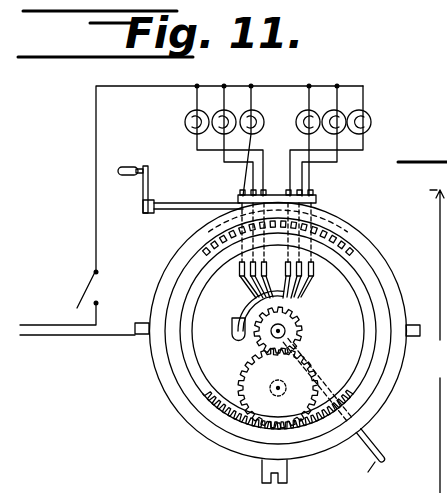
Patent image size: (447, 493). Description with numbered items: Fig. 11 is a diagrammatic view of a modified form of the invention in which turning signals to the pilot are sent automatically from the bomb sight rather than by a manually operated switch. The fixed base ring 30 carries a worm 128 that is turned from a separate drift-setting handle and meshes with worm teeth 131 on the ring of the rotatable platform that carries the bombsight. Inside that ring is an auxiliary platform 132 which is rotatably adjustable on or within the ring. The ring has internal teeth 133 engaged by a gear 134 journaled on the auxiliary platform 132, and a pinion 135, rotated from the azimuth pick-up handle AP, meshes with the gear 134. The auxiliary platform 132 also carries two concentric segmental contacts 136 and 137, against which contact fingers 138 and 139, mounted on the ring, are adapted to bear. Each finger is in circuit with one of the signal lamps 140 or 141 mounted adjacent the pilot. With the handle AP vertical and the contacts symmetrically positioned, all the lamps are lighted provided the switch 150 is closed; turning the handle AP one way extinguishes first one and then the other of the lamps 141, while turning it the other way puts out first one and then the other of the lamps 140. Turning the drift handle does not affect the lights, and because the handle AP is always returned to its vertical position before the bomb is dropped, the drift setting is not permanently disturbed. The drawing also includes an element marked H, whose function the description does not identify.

The fixed base ring 30 is at (160, 289).
The worm 128 is at (249, 191).
The worm teeth 131 is at (320, 224).
The auxiliary platform 132 is at (184, 352).
The internal teeth 133 is at (236, 415).
The gear 134 is at (312, 353).
The pinion 135 is at (288, 332).
The segmental contact 136 is at (232, 326).
The segmental contact 137 is at (249, 345).
The contact finger 138 is at (252, 293).
The contact finger 139 is at (305, 291).
The signal lamp 140 is at (189, 110).
The signal lamp 141 is at (369, 112).
The switch 150 is at (88, 281).
The azimuth pick-up handle AP is at (333, 415).
The reference line H is at (422, 327).